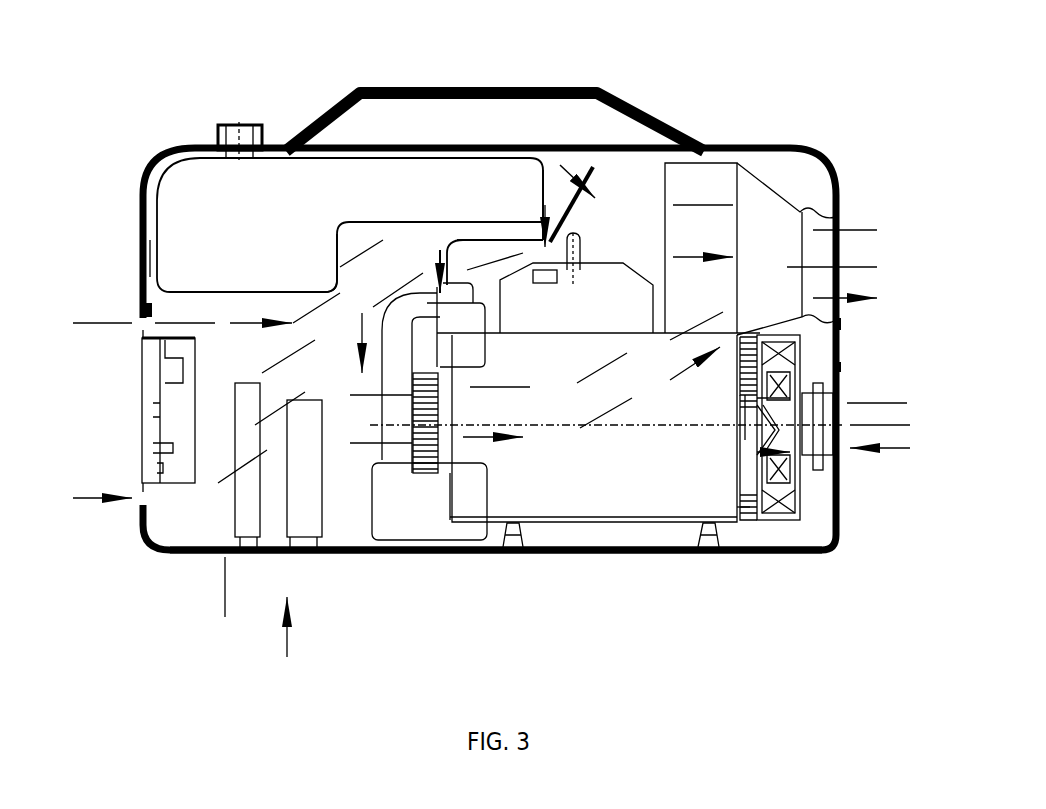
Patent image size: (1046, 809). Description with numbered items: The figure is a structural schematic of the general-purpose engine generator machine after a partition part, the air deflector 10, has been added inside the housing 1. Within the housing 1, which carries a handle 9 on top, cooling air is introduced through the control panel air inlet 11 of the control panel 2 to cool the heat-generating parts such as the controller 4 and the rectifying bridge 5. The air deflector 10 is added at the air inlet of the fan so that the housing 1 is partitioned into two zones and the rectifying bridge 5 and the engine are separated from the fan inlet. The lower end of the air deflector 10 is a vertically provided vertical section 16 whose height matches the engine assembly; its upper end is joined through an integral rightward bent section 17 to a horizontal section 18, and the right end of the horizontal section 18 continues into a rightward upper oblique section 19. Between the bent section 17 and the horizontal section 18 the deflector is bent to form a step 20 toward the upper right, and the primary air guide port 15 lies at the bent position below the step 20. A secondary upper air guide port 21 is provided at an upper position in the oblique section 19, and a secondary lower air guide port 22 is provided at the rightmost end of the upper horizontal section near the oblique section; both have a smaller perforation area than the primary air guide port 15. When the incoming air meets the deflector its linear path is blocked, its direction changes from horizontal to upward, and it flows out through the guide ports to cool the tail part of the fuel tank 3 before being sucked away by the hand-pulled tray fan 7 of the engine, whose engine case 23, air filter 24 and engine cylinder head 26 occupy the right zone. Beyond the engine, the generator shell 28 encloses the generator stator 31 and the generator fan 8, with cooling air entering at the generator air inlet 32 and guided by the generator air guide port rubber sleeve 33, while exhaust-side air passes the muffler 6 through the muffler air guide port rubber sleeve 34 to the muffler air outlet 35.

The housing 1 is at (150, 188).
The control panel 2 is at (200, 412).
The fuel tank 3 is at (147, 247).
The controller 4 is at (247, 490).
The rectifying bridge 5 is at (283, 494).
The muffler 6 is at (677, 247).
The hand-pulled tray fan 7 is at (432, 485).
The generator fan 8 is at (708, 523).
The handle 9 is at (343, 97).
The air deflector 10 is at (347, 553).
The control panel air inlet 11 is at (137, 318).
The primary air guide port 15 is at (437, 290).
The vertical section 16 is at (340, 400).
The bent section 17 is at (343, 275).
The horizontal section 18 is at (500, 237).
The oblique section 19 is at (572, 160).
The step 20 is at (457, 237).
The secondary upper air guide port 21 is at (578, 190).
The secondary lower air guide port 22 is at (550, 240).
The engine case 23 is at (558, 473).
The air filter 24 is at (383, 523).
The engine cylinder head 26 is at (570, 293).
The generator shell 28 is at (737, 507).
The generator stator 31 is at (765, 510).
The generator air inlet 32 is at (847, 403).
The generator air guide port rubber sleeve 33 is at (822, 473).
The muffler air guide port rubber sleeve 34 is at (800, 213).
The muffler air outlet 35 is at (835, 250).